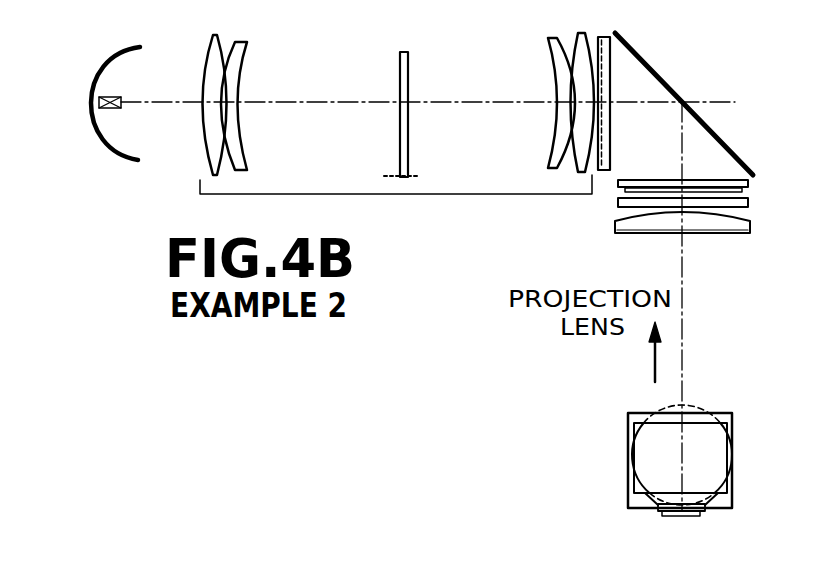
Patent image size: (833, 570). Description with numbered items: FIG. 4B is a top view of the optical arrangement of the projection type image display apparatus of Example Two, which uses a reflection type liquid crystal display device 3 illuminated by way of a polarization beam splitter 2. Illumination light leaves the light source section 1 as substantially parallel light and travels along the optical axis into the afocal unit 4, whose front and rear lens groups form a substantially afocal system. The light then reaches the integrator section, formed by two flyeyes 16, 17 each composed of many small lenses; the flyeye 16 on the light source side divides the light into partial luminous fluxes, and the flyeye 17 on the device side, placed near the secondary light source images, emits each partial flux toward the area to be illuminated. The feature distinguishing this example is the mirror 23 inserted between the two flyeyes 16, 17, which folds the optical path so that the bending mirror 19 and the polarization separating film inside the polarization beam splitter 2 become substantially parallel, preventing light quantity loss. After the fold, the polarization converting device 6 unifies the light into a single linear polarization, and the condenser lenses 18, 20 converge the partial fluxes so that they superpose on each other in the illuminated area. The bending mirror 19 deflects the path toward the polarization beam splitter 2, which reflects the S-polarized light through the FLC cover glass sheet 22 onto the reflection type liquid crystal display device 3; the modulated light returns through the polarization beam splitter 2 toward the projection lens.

The light source section 1 is at (123, 162).
The polarization beam splitter 2 is at (710, 473).
The reflection type liquid crystal display device 3 is at (702, 515).
The afocal unit 4 is at (405, 194).
The polarization converting device 6 is at (749, 203).
The flyeye 16 is at (610, 142).
The flyeye 17 is at (749, 183).
The condenser lens 18 is at (748, 233).
The bending mirror 19 is at (728, 413).
The condenser lens 20 is at (650, 418).
The FLC cover glass sheet 22 is at (657, 508).
The mirror 23 is at (658, 74).